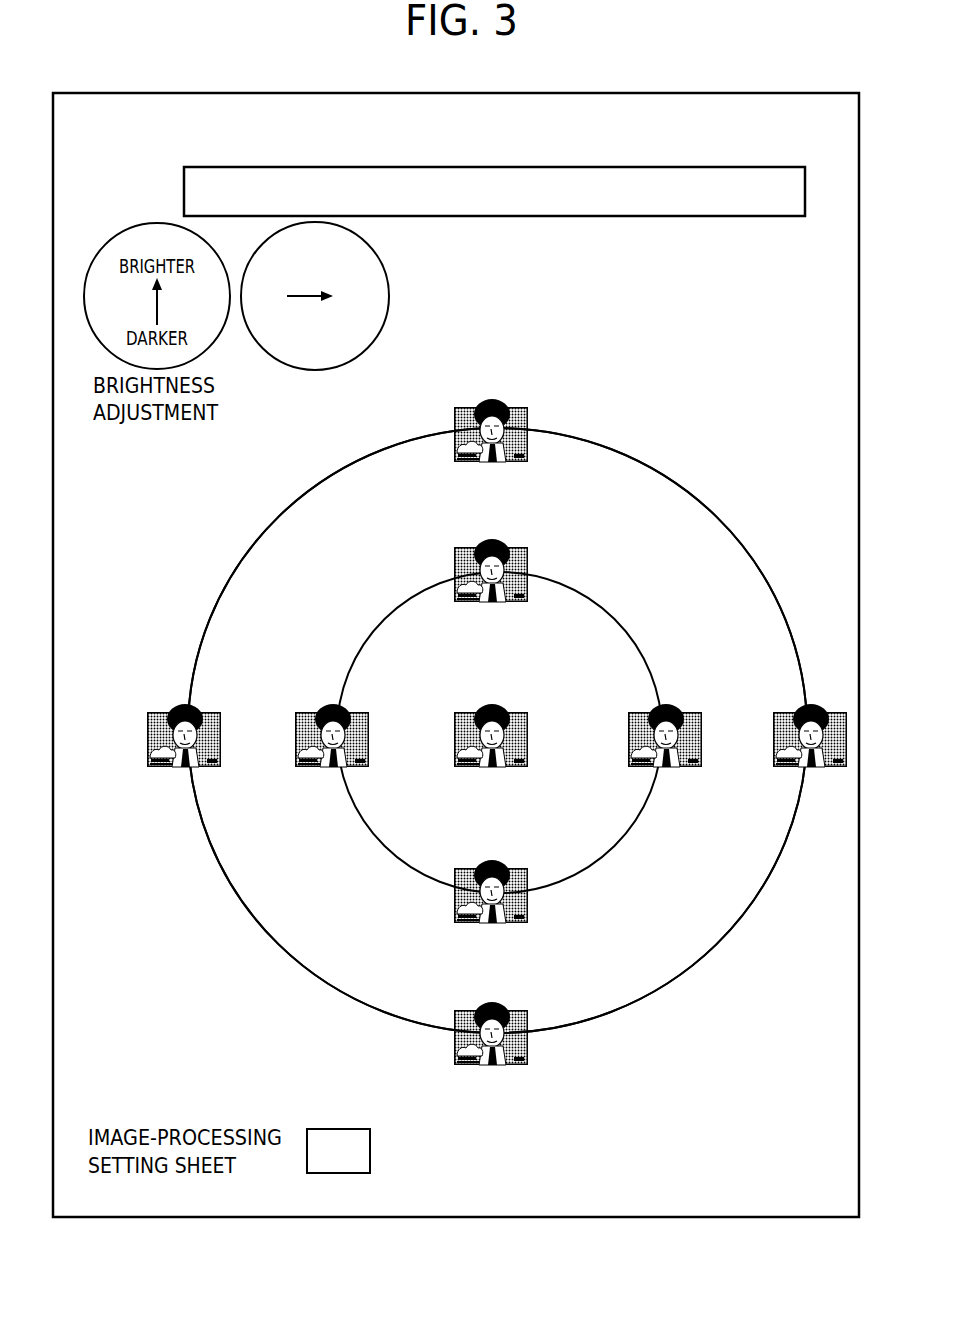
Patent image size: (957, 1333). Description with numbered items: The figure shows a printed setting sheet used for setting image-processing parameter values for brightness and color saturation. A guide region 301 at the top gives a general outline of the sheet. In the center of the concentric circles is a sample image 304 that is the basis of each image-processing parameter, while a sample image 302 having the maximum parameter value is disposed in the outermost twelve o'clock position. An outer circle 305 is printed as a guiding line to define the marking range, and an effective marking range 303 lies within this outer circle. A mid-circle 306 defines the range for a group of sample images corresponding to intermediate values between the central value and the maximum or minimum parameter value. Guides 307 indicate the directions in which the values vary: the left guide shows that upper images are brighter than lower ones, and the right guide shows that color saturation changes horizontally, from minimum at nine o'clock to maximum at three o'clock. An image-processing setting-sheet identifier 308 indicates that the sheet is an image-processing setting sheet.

The guide region 301 is at (727, 167).
The sample image 302 is at (526, 418).
The effective marking range 303 is at (717, 608).
The sample image 304 is at (523, 712).
The outer circle 305 is at (632, 1010).
The mid-circle 306 is at (585, 875).
The guides 307 is at (390, 290).
The image-processing setting-sheet identifier 308 is at (350, 1129).